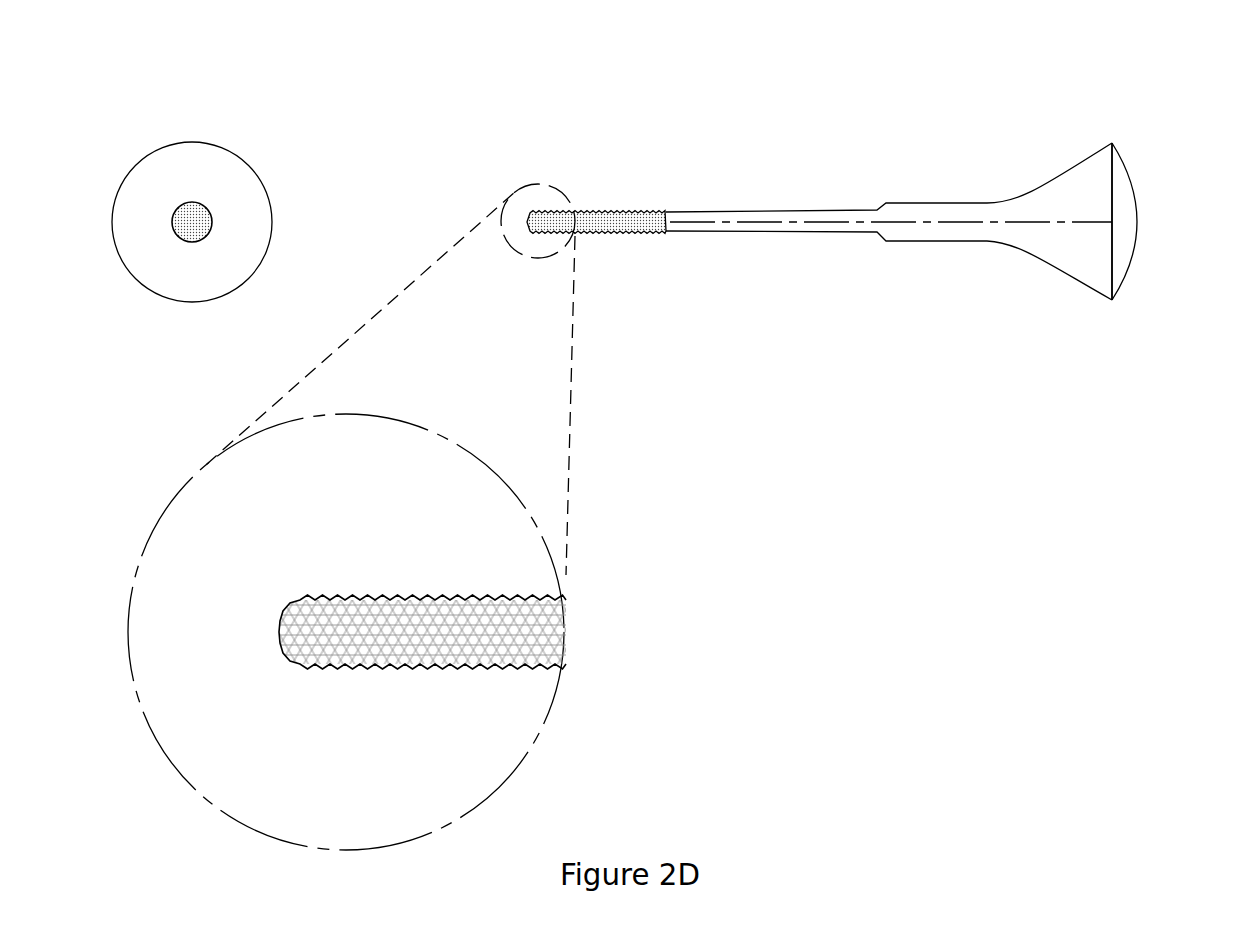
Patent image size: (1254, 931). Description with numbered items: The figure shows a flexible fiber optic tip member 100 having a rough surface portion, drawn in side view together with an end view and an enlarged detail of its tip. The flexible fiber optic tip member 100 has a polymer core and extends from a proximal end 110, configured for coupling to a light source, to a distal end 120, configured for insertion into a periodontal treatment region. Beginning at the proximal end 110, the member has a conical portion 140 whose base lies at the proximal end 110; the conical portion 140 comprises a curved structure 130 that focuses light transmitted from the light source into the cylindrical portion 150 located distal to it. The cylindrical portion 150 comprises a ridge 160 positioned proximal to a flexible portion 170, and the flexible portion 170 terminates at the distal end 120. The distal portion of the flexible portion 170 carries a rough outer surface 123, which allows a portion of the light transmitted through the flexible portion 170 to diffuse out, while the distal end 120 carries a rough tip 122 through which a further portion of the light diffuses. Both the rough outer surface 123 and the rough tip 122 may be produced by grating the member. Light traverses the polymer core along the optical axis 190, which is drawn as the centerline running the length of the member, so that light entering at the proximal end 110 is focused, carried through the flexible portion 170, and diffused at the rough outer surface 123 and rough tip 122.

The flexible fiber optic tip member 100 is at (1113, 98).
The proximal end 110 is at (243, 168).
The distal end 120 is at (202, 240).
The rough tip 122 is at (182, 240).
The rough outer surface 123 is at (464, 667).
The curved structure 130 is at (1135, 200).
The conical portion 140 is at (1017, 253).
The cylindrical portion 150 is at (527, 178).
The ridge 160 is at (908, 297).
The flexible portion 170 is at (875, 263).
The optical axis 190 is at (1103, 220).